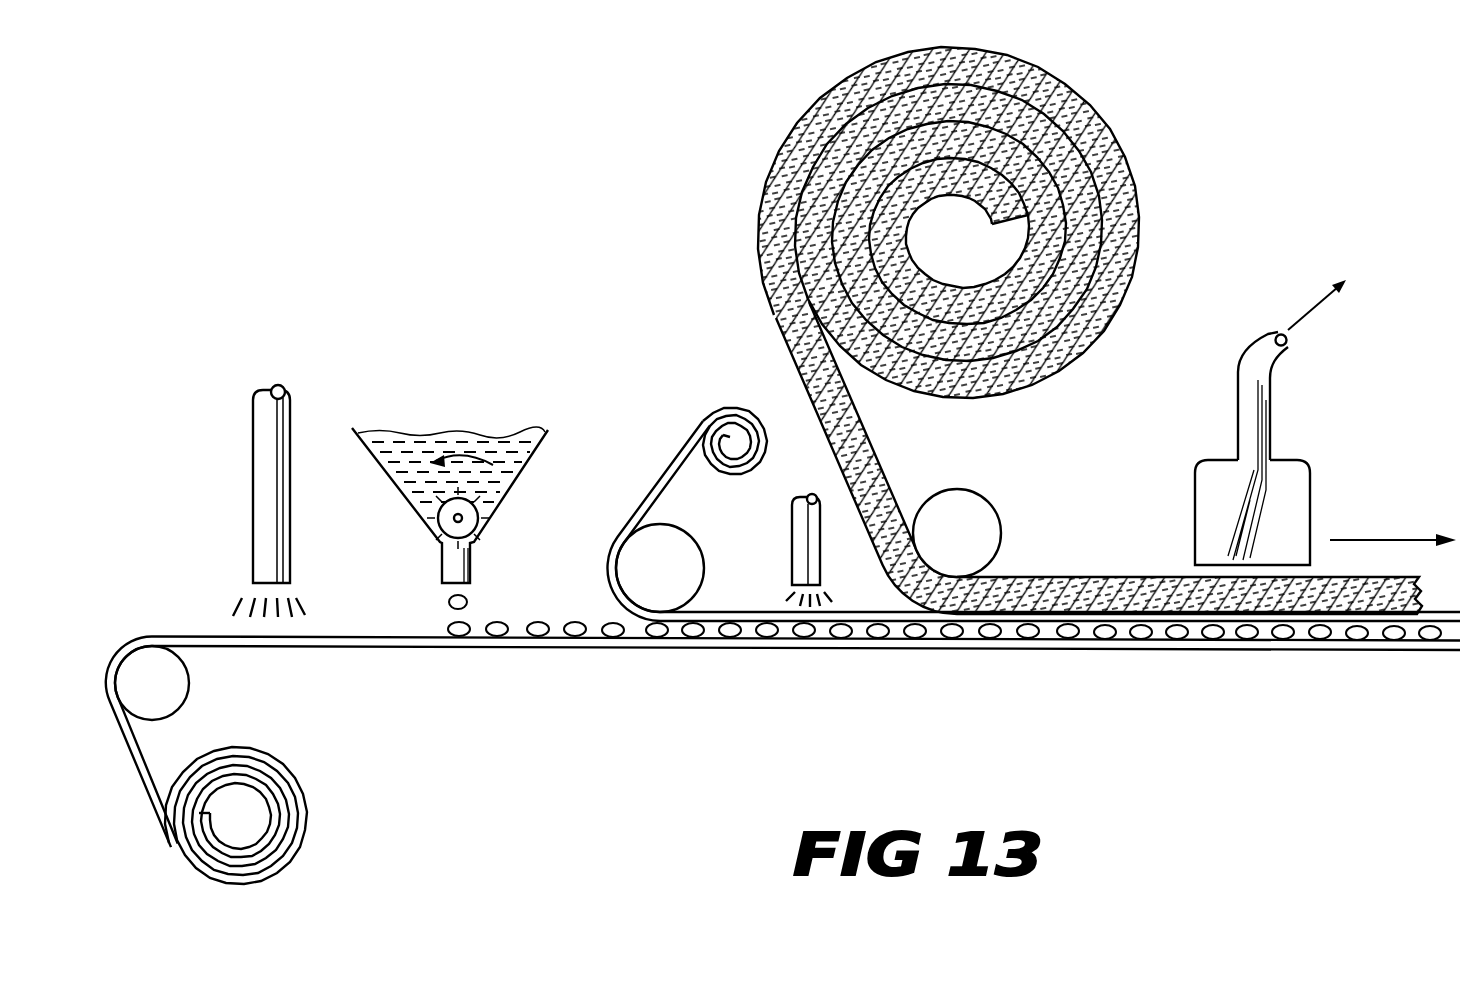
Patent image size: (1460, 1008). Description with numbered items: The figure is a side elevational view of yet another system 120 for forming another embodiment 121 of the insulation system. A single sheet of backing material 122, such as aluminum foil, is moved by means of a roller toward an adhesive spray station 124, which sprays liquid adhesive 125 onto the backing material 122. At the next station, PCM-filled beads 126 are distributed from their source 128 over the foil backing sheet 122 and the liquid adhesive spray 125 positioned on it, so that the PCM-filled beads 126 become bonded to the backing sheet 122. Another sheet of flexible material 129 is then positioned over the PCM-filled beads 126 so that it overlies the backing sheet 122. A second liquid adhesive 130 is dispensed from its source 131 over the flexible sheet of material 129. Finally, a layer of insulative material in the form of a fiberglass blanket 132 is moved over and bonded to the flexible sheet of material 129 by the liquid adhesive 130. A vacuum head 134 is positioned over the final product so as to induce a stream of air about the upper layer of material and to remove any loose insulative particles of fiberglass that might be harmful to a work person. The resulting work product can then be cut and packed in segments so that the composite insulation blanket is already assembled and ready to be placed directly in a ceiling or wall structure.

The system 120 is at (222, 526).
The embodiment of the insulation system 121 is at (1317, 556).
The sheet of backing material 122 is at (357, 650).
The adhesive spray station 124 is at (283, 506).
The liquid adhesive spray 125 is at (235, 607).
The PCM-filled beads 126 is at (466, 602).
The source of PCM-filled beads 128 is at (490, 440).
The sheet of flexible material 129 is at (660, 468).
The second liquid adhesive 130 is at (788, 598).
The source of second liquid adhesive 131 is at (798, 533).
The fiberglass blanket 132 is at (758, 220).
The vacuum head 134 is at (1210, 485).